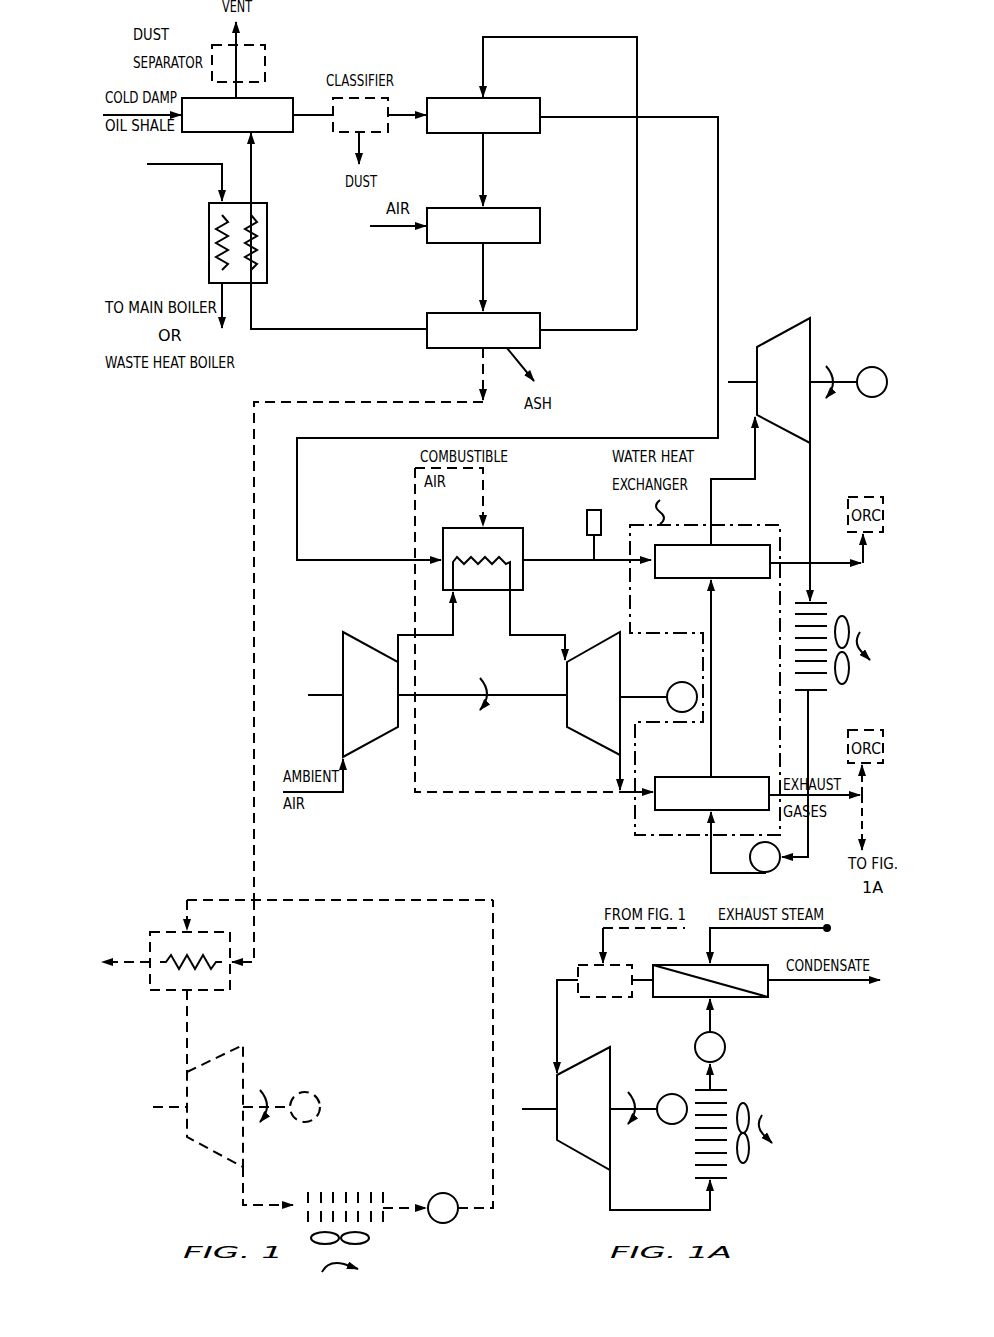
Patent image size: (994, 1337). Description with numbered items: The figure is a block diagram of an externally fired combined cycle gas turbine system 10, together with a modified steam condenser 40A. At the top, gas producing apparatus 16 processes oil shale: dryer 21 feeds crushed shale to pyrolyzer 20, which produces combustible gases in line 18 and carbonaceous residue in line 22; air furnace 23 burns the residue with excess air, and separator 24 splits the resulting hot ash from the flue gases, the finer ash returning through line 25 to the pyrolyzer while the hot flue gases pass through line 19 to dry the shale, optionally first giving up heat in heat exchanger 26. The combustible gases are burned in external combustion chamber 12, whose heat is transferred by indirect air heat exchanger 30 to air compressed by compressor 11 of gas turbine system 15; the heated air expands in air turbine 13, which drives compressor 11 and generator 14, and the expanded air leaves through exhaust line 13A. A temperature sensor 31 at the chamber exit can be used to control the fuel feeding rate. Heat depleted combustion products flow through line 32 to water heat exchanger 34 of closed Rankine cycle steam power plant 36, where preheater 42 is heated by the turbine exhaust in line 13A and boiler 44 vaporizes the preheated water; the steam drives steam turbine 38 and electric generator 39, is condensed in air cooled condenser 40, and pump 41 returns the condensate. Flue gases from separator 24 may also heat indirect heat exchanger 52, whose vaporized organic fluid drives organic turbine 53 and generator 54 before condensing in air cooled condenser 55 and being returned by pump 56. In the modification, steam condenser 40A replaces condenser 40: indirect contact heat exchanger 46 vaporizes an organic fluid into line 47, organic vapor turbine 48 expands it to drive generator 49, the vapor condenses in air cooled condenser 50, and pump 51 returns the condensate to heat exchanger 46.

In FIG. 1, the externally fired combined cycle gas turbine system 10 is at (779, 160).
In FIG. 1, the compressor 11 is at (350, 632).
In FIG. 1, the external combustion chamber 12 is at (482, 592).
In FIG. 1, the air turbine 13 is at (600, 632).
In FIG. 1, the exhaust line 13A is at (620, 800).
In FIG. 1, the generator 14 is at (680, 682).
In FIG. 1, the gas turbine system 15 is at (504, 747).
In FIG. 1, the gas producing apparatus 16 is at (291, 310).
In FIG. 1, the combustible gases line 18 is at (734, 216).
In FIG. 1, the hot flue gases line 19 is at (297, 331).
In FIG. 1, the pyrolyzer 20 is at (515, 97).
In FIG. 1, the dryer 21 is at (293, 97).
In FIG. 1, the carbonaceous residue line 22 is at (483, 182).
In FIG. 1, the air furnace 23 is at (540, 226).
In FIG. 1, the separator 24 is at (515, 312).
In FIG. 1, the hot ash line 25 is at (567, 335).
In FIG. 1, the heat exchanger 26 is at (267, 225).
In FIG. 1, the indirect air heat exchanger 30 is at (523, 570).
In FIG. 1, the temperature sensor 31 is at (589, 509).
In FIG. 1, the combustion products line 32 is at (612, 563).
In FIG. 1, the water heat exchanger 34 is at (656, 837).
In FIG. 1, the closed Rankine cycle steam power plant 36 is at (586, 838).
In FIG. 1, the steam turbine 38 is at (790, 322).
In FIG. 1, the electric generator 39 is at (868, 367).
In FIG. 1, the condenser 40 is at (830, 690).
In FIG. 1, the pump 41 is at (752, 862).
In FIG. 1, the preheater 42 is at (742, 776).
In FIG. 1, the boiler 44 is at (737, 579).
In FIG. 1, the indirect heat exchanger 52 is at (230, 985).
In FIG. 1, the organic turbine 53 is at (245, 1072).
In FIG. 1, the generator 54 is at (318, 1096).
In FIG. 1, the condenser 55 is at (346, 1192).
In FIG. 1, the pump 56 is at (444, 1193).
In FIG. 1A, the steam condenser 40A is at (775, 1077).
In FIG. 1A, the indirect contact heat exchanger 46 is at (732, 964).
In FIG. 1A, the vaporized organic fluid line 47 is at (555, 1020).
In FIG. 1A, the organic vapor turbine 48 is at (592, 1057).
In FIG. 1A, the generator 49 is at (672, 1094).
In FIG. 1A, the condenser 50 is at (695, 1153).
In FIG. 1A, the pump 51 is at (722, 1038).